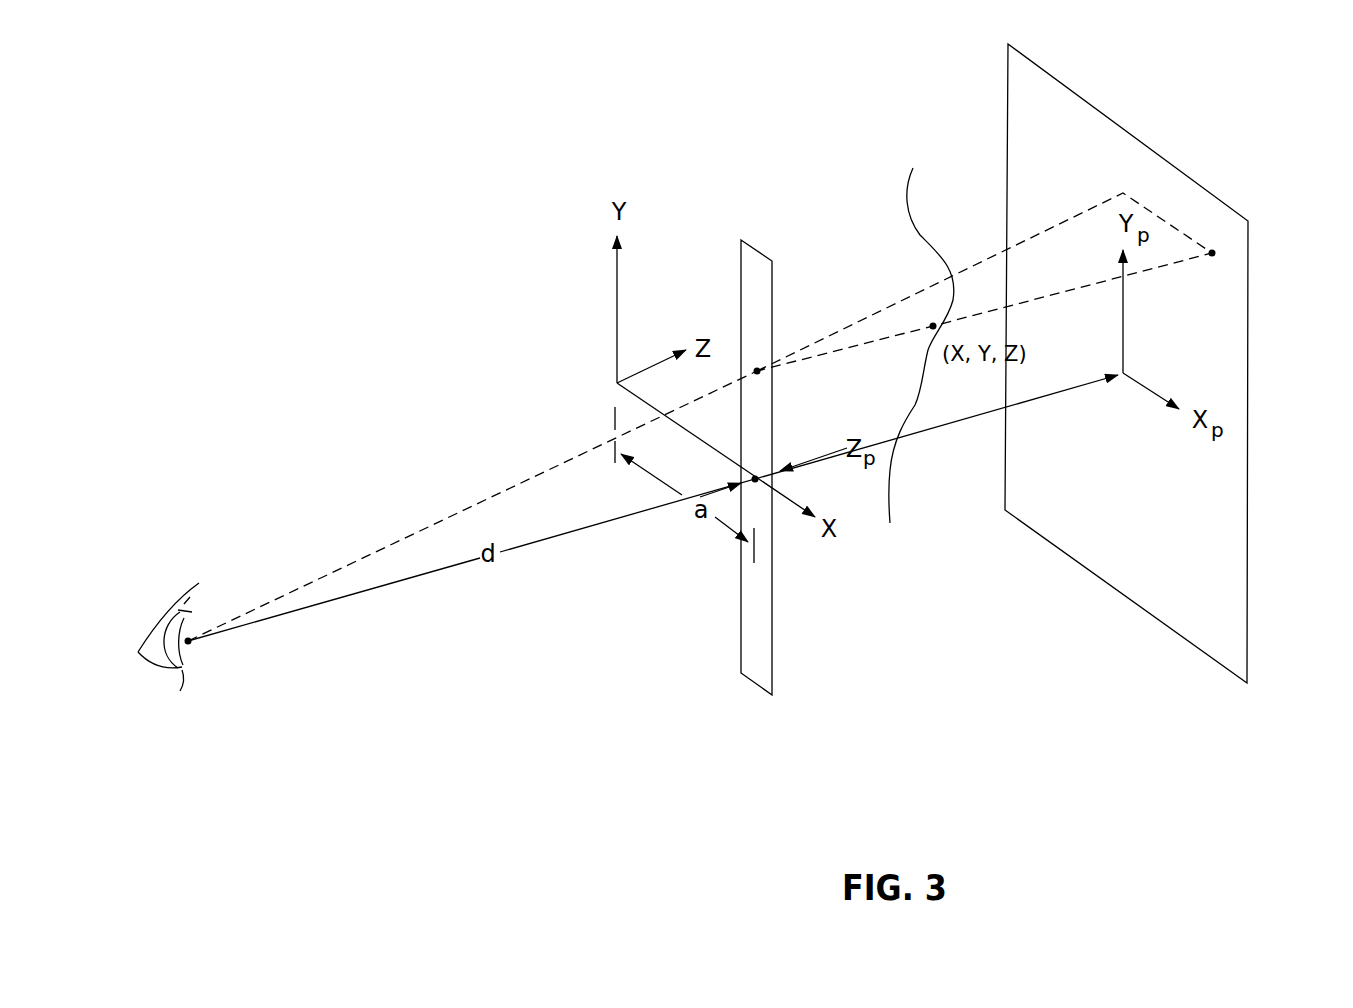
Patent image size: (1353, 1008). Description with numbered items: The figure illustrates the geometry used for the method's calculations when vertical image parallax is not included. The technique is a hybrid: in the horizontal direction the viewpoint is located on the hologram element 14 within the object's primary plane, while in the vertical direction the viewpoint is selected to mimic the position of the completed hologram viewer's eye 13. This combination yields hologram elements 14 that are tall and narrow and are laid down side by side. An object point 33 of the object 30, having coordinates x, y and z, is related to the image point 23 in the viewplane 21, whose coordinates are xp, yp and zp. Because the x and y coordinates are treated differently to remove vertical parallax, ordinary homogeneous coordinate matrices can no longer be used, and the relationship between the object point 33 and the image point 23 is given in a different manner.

The viewer's eye 13 is at (145, 675).
The hologram element 14 is at (757, 247).
The viewplane 21 is at (1230, 512).
The image point 23 is at (1212, 253).
The object 30 is at (890, 505).
The object point 33 is at (933, 326).